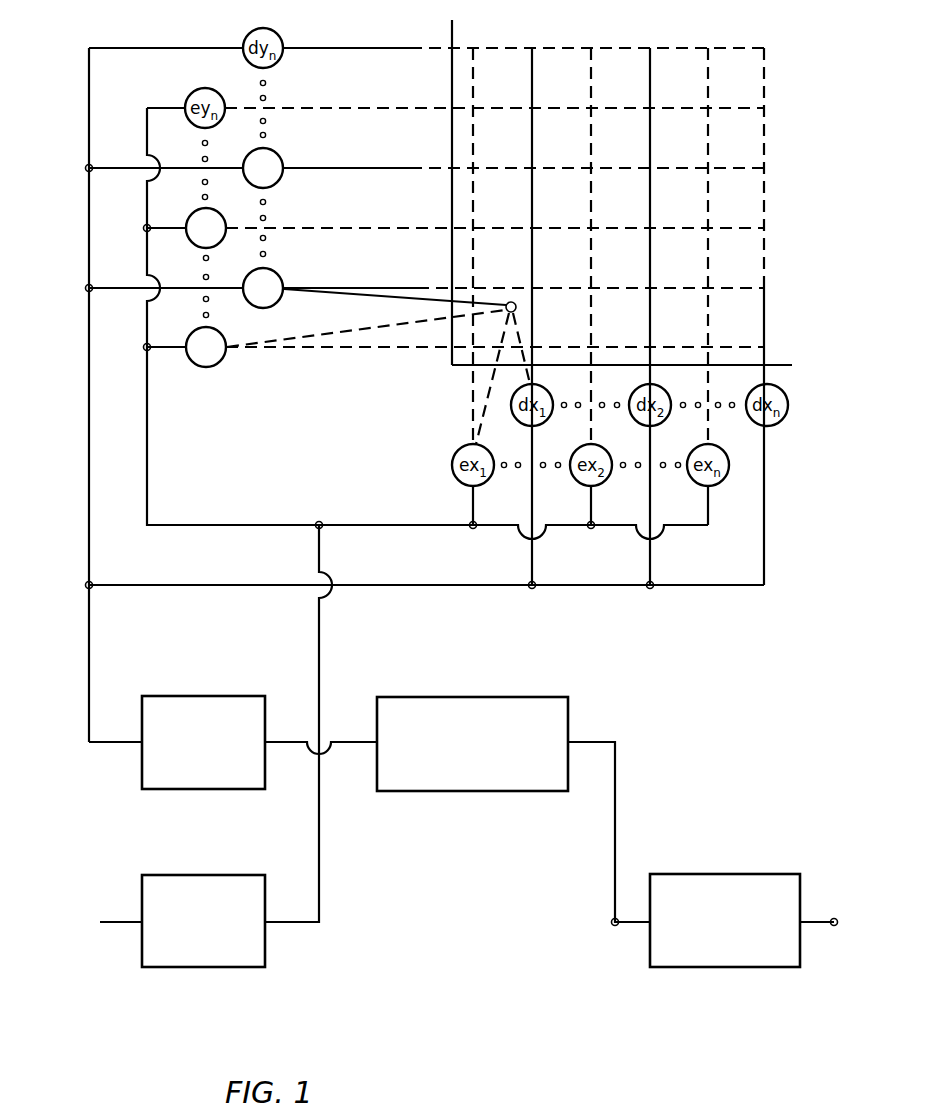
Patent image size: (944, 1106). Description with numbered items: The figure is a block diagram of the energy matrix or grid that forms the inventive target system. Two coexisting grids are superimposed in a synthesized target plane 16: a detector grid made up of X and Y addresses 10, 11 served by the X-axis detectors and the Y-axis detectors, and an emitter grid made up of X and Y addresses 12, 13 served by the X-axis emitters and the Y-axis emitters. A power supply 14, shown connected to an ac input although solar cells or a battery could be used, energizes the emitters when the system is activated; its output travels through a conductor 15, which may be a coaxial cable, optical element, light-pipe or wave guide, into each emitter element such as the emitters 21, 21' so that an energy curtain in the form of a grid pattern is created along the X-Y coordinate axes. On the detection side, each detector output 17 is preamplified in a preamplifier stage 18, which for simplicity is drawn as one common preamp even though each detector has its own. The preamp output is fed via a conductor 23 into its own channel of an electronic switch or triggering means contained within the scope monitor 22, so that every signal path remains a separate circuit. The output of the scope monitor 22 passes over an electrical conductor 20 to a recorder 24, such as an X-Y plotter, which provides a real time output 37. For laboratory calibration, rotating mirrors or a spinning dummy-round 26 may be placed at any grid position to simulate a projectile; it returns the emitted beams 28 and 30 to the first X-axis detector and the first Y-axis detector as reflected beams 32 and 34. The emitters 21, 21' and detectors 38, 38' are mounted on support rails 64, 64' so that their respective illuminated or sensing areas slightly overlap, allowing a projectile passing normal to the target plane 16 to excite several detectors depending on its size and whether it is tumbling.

The detector grid X-axis addresses 10 is at (532, 210).
The detector grid Y-axis addresses 11 is at (340, 48).
The emitter grid X-axis addresses 12 is at (470, 272).
The emitter grid Y-axis addresses 13 is at (335, 108).
The power supply 14 is at (240, 875).
The conductor 15 is at (265, 524).
The synthesized target plane 16 is at (568, 137).
The detector output 17 is at (90, 460).
The preamplifier stage 18 is at (178, 696).
The electrical conductor 20 is at (617, 770).
The emitter 21 is at (203, 370).
The emitter 21' is at (192, 239).
The scope monitor 22 is at (437, 697).
The conductor 23 is at (358, 745).
The recorder 24 is at (745, 874).
The spinning dummy-round 26 is at (515, 303).
The emitted beam 28 is at (488, 393).
The emitted beam 30 is at (275, 340).
The reflected beam 32 is at (518, 336).
The reflected beam 34 is at (423, 301).
The real time output 37 is at (822, 906).
The detector 38 is at (281, 285).
The detector 38' is at (282, 160).
The support rail 64 is at (636, 345).
The support rail 64' is at (483, 184).